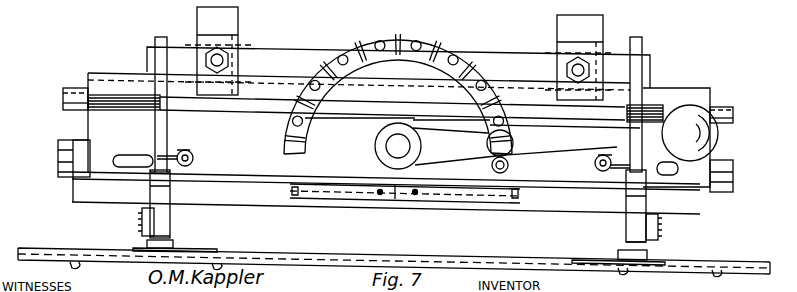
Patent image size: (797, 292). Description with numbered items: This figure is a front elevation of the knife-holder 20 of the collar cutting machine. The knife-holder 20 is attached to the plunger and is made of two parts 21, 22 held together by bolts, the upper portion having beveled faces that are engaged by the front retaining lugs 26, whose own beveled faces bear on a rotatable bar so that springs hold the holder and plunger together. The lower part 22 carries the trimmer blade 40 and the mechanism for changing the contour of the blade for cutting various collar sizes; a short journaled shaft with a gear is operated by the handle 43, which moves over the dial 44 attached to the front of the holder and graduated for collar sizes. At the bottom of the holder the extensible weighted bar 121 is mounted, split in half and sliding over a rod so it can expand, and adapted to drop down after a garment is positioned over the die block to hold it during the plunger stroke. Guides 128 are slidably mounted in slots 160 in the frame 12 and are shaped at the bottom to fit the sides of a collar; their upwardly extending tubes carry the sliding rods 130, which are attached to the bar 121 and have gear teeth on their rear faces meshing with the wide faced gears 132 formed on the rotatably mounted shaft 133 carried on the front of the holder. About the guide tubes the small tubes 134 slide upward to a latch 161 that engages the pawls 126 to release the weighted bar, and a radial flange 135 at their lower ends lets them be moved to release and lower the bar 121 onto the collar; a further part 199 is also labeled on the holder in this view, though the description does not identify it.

The frame 12 is at (446, 250).
The knife-holder 20 is at (519, 54).
The upper part of knife-holder 21 is at (650, 95).
The lower part of knife-holder 22 is at (82, 158).
The front retaining lug 26 is at (238, 24).
The trimmer blade 40 is at (100, 192).
The handle 43 is at (590, 150).
The dial 44 is at (390, 33).
The extensible weighted bar 121 is at (512, 210).
The pawl 126 is at (172, 163).
The guide 128 is at (205, 250).
The rod 130 is at (155, 42).
The wide faced gear 132 is at (135, 108).
The shaft 133 is at (268, 108).
The tube 134 is at (157, 191).
The radial flange 135 is at (166, 242).
The slot 160 is at (118, 257).
The latch 161 is at (176, 151).
The clamp 199 is at (150, 206).